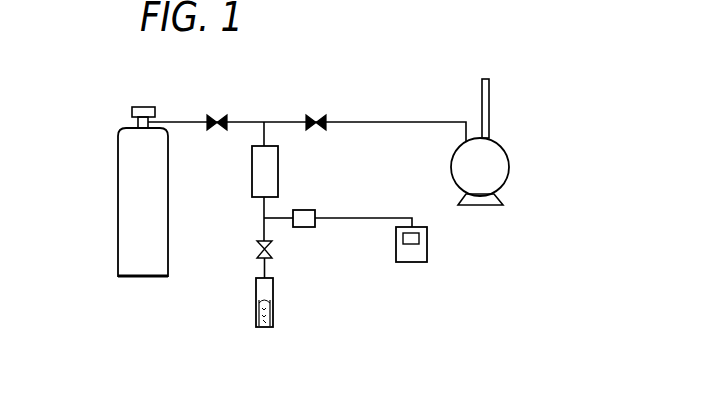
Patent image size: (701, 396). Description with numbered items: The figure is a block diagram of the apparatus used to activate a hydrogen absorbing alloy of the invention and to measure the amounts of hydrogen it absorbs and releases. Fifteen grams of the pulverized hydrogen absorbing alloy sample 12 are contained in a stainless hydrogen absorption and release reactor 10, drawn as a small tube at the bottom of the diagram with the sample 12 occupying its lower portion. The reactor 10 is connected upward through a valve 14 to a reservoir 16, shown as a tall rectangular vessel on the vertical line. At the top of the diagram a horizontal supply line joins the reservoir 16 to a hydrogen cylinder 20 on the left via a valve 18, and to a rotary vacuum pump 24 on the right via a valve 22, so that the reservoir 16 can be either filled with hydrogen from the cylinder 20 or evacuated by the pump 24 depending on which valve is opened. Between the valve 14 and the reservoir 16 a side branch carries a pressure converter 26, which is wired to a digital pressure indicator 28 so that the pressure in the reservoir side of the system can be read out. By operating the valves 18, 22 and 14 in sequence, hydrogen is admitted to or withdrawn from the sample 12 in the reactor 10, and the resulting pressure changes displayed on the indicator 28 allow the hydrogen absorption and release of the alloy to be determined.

The hydrogen absorption and release reactor 10 is at (275, 284).
The hydrogen absorbing alloy sample 12 is at (274, 319).
The valve 14 is at (274, 250).
The reservoir 16 is at (256, 176).
The valve 18 is at (219, 113).
The hydrogen cylinder 20 is at (122, 254).
The valve 22 is at (316, 113).
The rotary vacuum pump 24 is at (504, 168).
The pressure converter 26 is at (305, 210).
The digital pressure indicator 28 is at (428, 256).